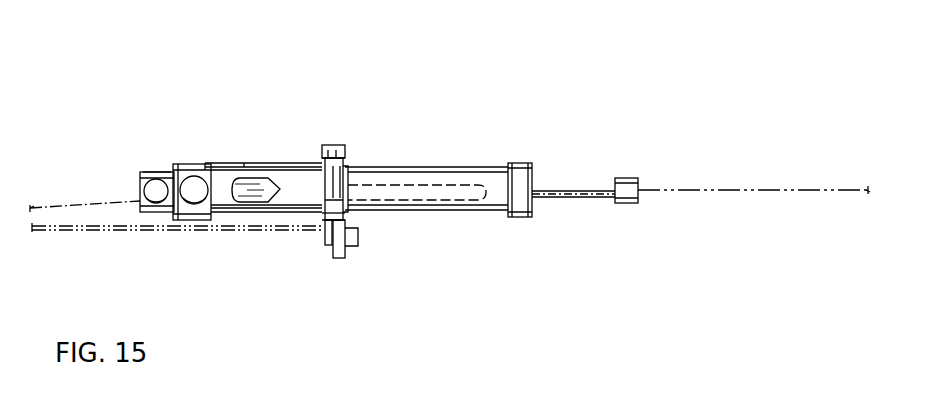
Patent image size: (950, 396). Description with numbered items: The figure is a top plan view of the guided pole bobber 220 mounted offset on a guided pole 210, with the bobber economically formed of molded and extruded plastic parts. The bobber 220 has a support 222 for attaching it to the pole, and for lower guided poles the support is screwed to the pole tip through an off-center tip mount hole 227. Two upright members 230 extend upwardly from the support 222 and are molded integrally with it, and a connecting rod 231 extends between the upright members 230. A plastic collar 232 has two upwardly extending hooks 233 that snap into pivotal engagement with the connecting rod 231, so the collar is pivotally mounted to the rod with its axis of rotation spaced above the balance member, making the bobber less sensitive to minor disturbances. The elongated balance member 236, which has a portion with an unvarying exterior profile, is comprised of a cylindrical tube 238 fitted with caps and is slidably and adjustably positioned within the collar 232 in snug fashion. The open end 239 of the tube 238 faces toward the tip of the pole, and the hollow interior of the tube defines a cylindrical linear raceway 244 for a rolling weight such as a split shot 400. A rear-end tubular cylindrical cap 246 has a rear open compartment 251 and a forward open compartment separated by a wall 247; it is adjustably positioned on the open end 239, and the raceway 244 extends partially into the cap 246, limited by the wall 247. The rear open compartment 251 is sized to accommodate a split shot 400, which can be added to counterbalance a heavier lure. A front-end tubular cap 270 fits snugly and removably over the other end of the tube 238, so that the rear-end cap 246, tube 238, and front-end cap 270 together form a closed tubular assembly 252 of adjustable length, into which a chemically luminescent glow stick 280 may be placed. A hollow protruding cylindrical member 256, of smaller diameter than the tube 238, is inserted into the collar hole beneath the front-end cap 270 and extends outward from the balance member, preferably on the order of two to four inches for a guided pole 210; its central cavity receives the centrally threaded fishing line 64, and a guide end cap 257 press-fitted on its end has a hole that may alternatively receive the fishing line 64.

The guided pole bobber 220 is at (425, 117).
The guided pole 210 is at (76, 233).
The rear open compartment 251 is at (140, 181).
The rear-end tubular cylindrical cap 246 is at (152, 172).
The wall 247 is at (184, 170).
The split shot 400 is at (146, 191).
The open end 239 is at (222, 163).
The cylindrical linear raceway 244 is at (248, 168).
The chemically luminescent glow stick 280 is at (258, 178).
The upright members 230 is at (330, 145).
The support 222 is at (340, 147).
The upwardly extending hooks 233 is at (345, 170).
The plastic collar 232 is at (348, 212).
The off-center tip mount hole 227 is at (350, 258).
The connecting rod 231 is at (350, 178).
The cylindrical tube 238 is at (438, 167).
The elongated balance member 236 is at (468, 167).
The tubular assembly 252 is at (490, 170).
The front-end tubular cap 270 is at (535, 180).
The hollow protruding cylindrical member 256 is at (576, 185).
The guide end cap 257 is at (622, 178).
The fishing line 64 is at (707, 190).